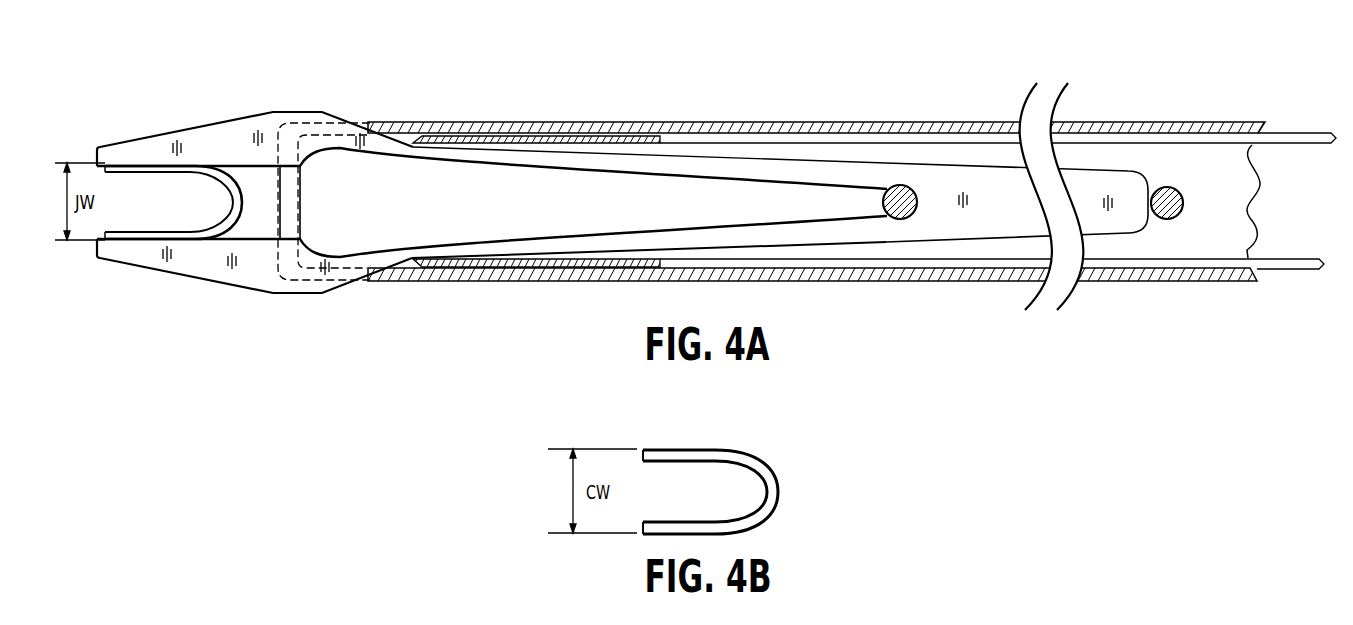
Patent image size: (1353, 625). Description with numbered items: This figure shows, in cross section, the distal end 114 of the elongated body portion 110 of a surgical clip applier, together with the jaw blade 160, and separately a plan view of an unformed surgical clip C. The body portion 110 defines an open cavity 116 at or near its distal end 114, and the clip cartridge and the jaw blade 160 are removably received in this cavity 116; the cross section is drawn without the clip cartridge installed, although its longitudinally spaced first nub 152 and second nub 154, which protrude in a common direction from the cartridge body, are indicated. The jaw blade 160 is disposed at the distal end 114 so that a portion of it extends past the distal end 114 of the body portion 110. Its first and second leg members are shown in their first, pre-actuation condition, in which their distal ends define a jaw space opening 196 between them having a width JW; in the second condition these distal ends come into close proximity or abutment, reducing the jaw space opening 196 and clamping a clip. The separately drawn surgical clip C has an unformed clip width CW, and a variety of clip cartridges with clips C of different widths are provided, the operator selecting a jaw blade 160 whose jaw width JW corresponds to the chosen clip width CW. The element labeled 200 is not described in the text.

In FIG. 4A, the body portion 110 is at (1228, 122).
In FIG. 4A, the distal end 114 is at (304, 270).
In FIG. 4A, the open cavity 116 is at (877, 208).
In FIG. 4A, the first nub 152 is at (1162, 188).
In FIG. 4A, the second nub 154 is at (895, 184).
In FIG. 4A, the jaw blade 160 is at (218, 140).
In FIG. 4A, the jaw space opening 196 is at (140, 217).
In FIG. 4A, the inner shaft sleeve 200 is at (461, 202).
In FIG. 4A, the surgical clip C is at (226, 221).
In FIG. 4B, the surgical clip C is at (755, 467).